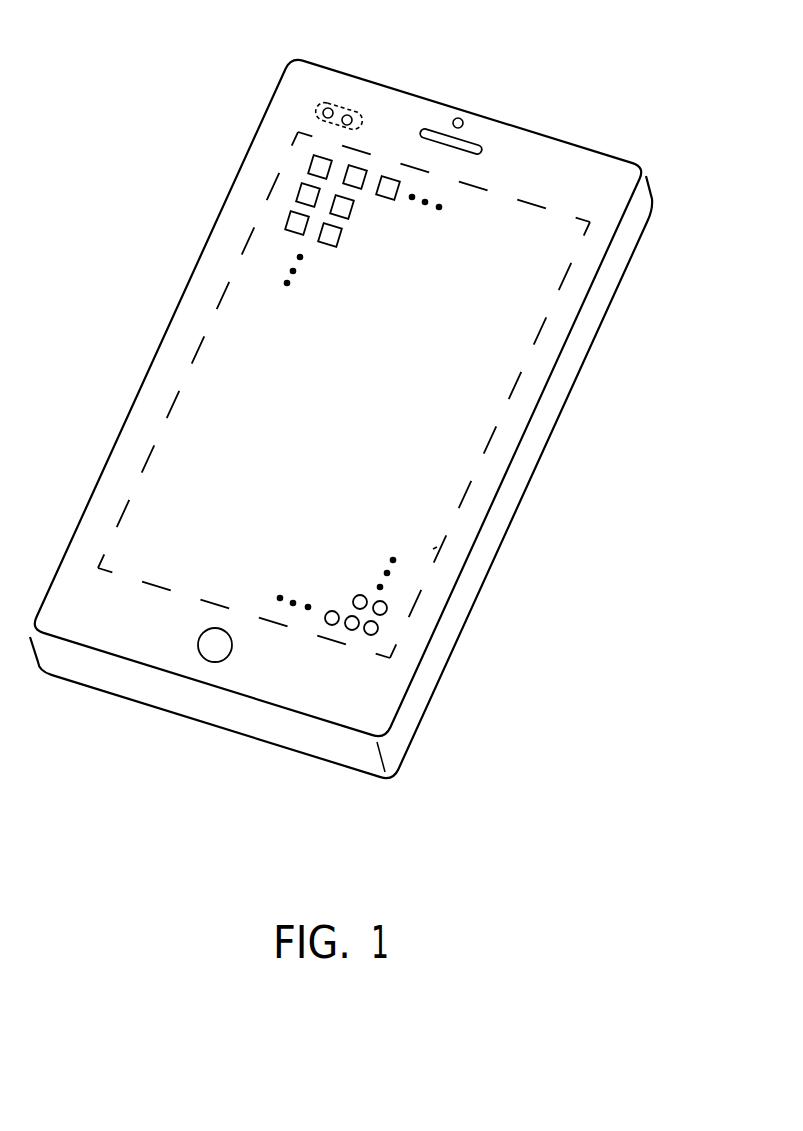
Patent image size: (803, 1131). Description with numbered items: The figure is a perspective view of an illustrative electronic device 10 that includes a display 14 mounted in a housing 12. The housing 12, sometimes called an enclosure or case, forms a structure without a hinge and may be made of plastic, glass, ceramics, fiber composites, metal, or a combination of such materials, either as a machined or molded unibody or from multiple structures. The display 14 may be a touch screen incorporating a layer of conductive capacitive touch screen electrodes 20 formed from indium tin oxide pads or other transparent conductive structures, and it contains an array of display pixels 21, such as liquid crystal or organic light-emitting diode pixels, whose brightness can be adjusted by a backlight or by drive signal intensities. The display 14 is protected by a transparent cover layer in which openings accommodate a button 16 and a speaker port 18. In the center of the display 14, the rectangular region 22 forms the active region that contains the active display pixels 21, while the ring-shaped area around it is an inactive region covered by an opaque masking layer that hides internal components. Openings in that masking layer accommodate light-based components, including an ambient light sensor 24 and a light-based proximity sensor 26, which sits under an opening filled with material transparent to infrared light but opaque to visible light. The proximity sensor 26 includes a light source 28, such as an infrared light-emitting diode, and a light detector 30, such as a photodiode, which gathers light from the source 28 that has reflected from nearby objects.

The electronic device 10 is at (641, 54).
The housing 12 is at (623, 273).
The display 14 is at (460, 431).
The button 16 is at (213, 664).
The speaker port 18 is at (427, 127).
The capacitive touch screen electrodes 20 is at (307, 162).
The display pixels 21 is at (360, 595).
The rectangular region 22 is at (435, 545).
The ambient light sensor 24 is at (460, 118).
The light-based proximity sensor 26 is at (322, 107).
The light source 28 is at (331, 108).
The light detector 30 is at (348, 113).